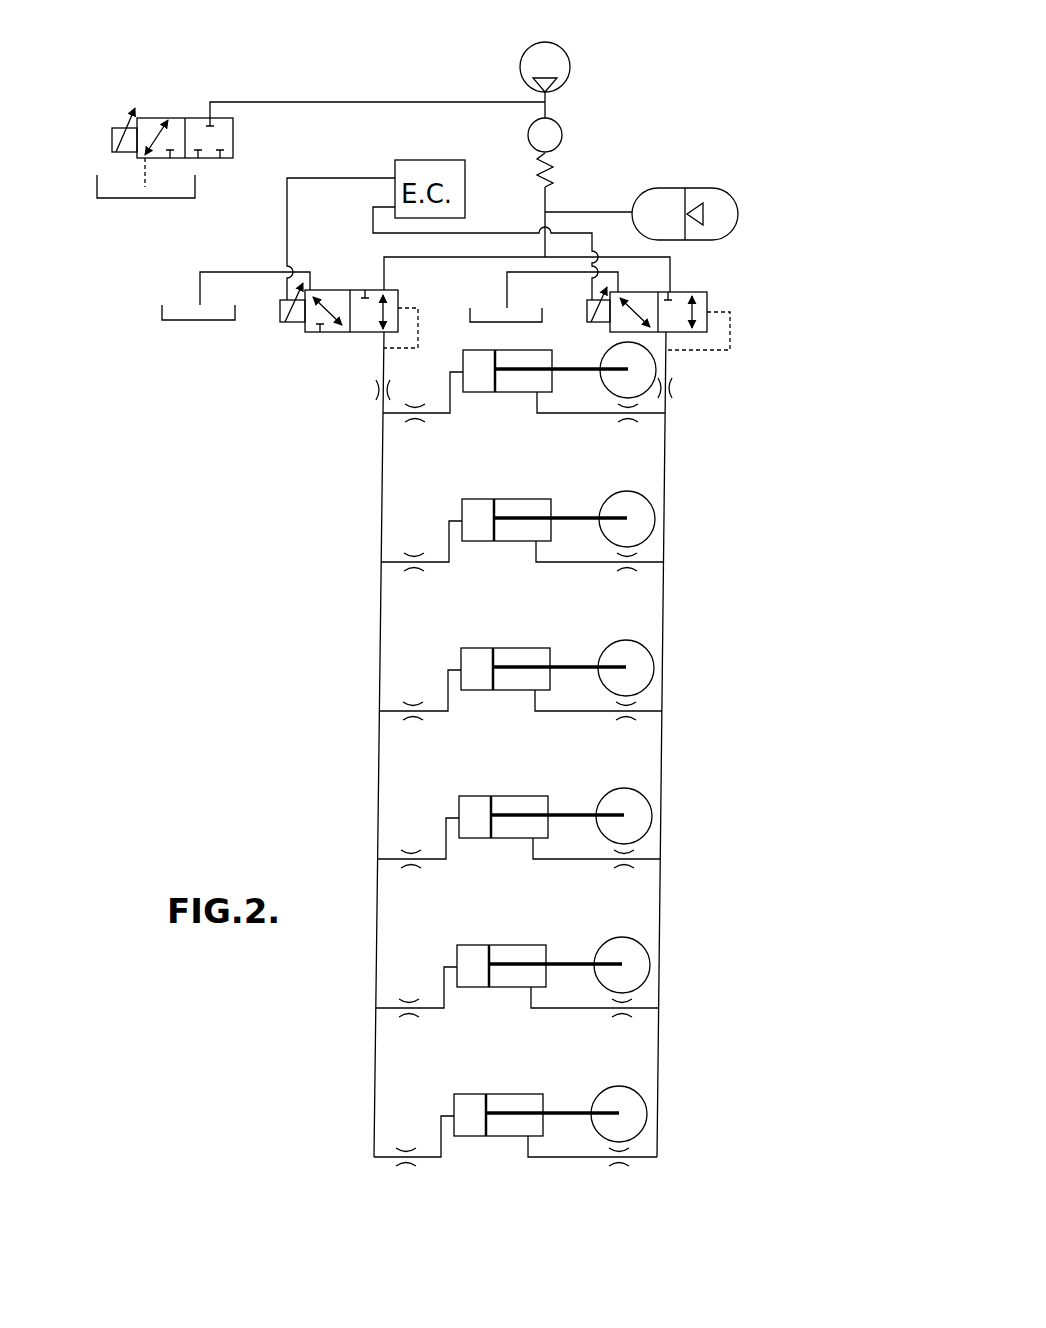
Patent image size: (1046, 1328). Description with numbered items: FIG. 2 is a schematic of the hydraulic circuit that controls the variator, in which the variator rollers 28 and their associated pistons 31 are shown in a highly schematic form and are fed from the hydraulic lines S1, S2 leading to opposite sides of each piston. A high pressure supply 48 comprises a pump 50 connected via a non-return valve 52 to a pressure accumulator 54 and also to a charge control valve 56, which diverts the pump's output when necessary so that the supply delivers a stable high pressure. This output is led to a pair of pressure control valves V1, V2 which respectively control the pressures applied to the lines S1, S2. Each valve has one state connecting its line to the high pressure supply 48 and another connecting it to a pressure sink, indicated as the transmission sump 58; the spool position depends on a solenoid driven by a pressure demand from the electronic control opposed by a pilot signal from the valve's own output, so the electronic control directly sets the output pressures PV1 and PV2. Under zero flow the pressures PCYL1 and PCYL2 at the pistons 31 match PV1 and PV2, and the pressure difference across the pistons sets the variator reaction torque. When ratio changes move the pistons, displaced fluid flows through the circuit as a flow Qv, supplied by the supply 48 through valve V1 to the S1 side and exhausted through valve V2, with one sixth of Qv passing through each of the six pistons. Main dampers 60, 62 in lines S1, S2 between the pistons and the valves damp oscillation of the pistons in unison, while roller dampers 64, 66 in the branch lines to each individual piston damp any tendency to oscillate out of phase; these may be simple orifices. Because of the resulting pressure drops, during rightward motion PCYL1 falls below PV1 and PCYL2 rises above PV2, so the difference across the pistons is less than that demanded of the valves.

The high pressure supply 48 is at (630, 76).
The pump 50 is at (572, 70).
The non-return valve 52 is at (558, 120).
The pressure accumulator 54 is at (690, 188).
The charge control valve 56 is at (233, 156).
The transmission sump 58 is at (137, 198).
The main damper 60 is at (377, 392).
The main damper 62 is at (670, 388).
The roller damper 64 is at (416, 390).
The roller damper 66 is at (600, 428).
The variator roller 28 is at (601, 401).
The piston 31 is at (524, 369).
The pressure control valve V1 is at (352, 286).
The pressure control valve V2 is at (702, 282).
The valve output pressure PV1 is at (364, 360).
The valve output pressure PV2 is at (694, 371).
The hydraulic line S1 is at (377, 743).
The hydraulic line S2 is at (660, 747).
The piston pressure PCYL1 is at (446, 419).
The piston pressure PCYL2 is at (518, 420).
The flow through the variator Qv is at (433, 1178).